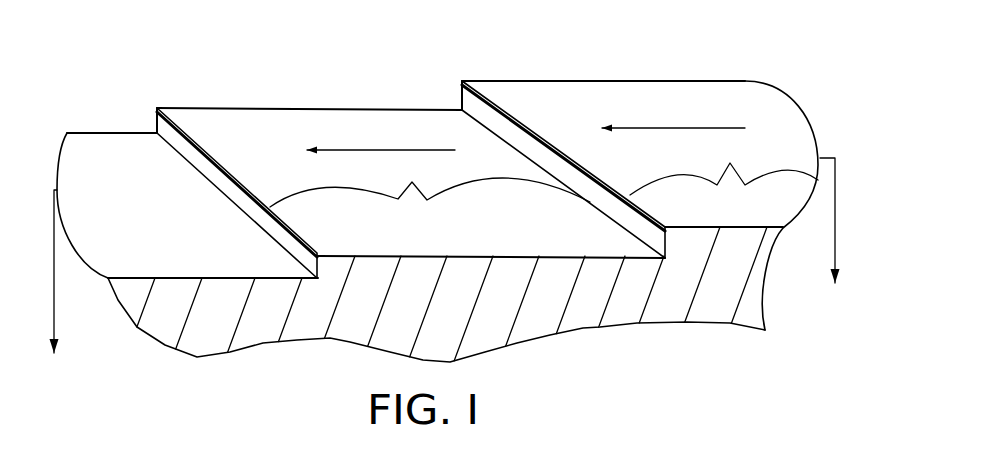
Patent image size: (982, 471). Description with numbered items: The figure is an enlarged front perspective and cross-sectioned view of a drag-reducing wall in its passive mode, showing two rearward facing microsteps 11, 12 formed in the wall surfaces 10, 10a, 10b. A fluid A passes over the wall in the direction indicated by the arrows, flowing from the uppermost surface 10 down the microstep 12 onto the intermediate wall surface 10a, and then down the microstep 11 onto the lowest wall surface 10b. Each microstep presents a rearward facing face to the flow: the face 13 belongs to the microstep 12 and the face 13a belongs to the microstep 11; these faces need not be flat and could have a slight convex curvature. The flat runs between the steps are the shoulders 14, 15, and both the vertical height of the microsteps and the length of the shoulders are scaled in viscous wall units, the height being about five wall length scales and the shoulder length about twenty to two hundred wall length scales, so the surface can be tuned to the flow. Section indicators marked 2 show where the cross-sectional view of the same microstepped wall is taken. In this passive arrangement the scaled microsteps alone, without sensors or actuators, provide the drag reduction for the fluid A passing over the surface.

The surface 10 is at (715, 102).
The wall surface 10a is at (285, 130).
The wall surface 10b is at (98, 170).
The microstep 11 is at (157, 107).
The microstep 12 is at (462, 80).
The rearward facing face 13 is at (517, 127).
The rearward facing step face 13a is at (209, 162).
The shoulder 14 is at (730, 163).
The shoulder 15 is at (412, 182).
The fluid A is at (372, 150).
The section line 2- 2 is at (447, 272).